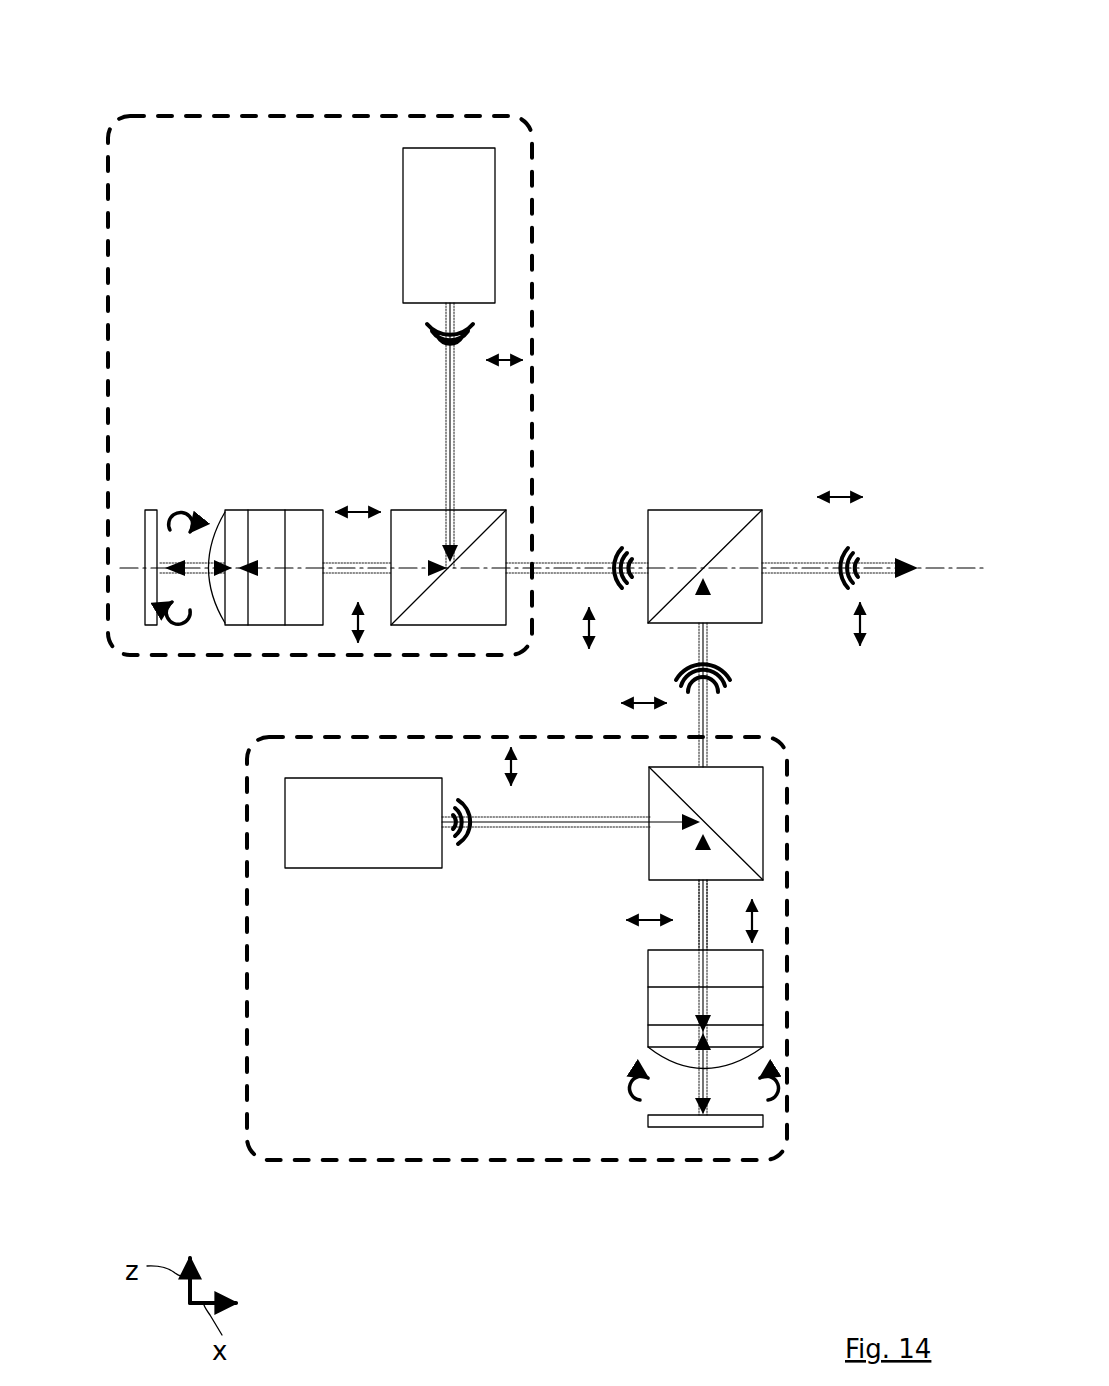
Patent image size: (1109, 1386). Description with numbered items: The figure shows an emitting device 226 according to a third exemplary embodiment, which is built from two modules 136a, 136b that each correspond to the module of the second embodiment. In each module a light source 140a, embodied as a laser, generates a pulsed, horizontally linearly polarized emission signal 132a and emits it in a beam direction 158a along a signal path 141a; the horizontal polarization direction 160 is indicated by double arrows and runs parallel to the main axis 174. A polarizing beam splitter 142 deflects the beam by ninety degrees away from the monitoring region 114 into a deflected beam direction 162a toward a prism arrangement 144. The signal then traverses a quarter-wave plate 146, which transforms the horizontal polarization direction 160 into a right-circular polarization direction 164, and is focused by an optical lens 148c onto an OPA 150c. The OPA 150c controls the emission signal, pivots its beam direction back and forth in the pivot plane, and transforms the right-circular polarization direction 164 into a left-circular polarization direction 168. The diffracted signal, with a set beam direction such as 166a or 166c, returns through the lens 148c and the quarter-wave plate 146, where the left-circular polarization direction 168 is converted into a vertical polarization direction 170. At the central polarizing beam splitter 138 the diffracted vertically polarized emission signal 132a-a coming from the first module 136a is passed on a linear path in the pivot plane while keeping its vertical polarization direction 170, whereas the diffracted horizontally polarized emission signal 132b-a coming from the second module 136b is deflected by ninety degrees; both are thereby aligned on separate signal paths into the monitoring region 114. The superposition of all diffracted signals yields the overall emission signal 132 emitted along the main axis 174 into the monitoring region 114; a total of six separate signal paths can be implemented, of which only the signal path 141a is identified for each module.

The emitting device 226 is at (118, 62).
The first module 136a is at (276, 115).
The second module 136b is at (420, 1162).
The light source 140a is at (390, 508).
The beam direction 158a is at (448, 377).
The signal path 141a is at (452, 405).
The emission signal 132a is at (432, 340).
The horizontal polarization direction 160 is at (508, 360).
The vertical polarization direction 170 is at (362, 637).
The polarizing beam splitter 142 is at (470, 510).
The deflected beam direction 162a is at (325, 510).
The prism arrangement 144 is at (280, 510).
The quarter-wave plate 146 is at (238, 510).
The optical lens 148c is at (206, 512).
The right-circular polarization direction 164 is at (165, 510).
The left-circular polarization direction 168 is at (178, 625).
The OPA 150c is at (150, 620).
The set beam direction 166c is at (333, 620).
The set beam direction 166a is at (558, 562).
The polarizing beam splitter 138 is at (708, 540).
The diffracted vertically polarized emission signal 132a-a is at (618, 545).
The diffracted horizontally polarized emission signal 132b-a is at (730, 675).
The overall emission signal 132 is at (862, 558).
The main axis 174 is at (958, 555).
The monitoring region 114 is at (940, 609).